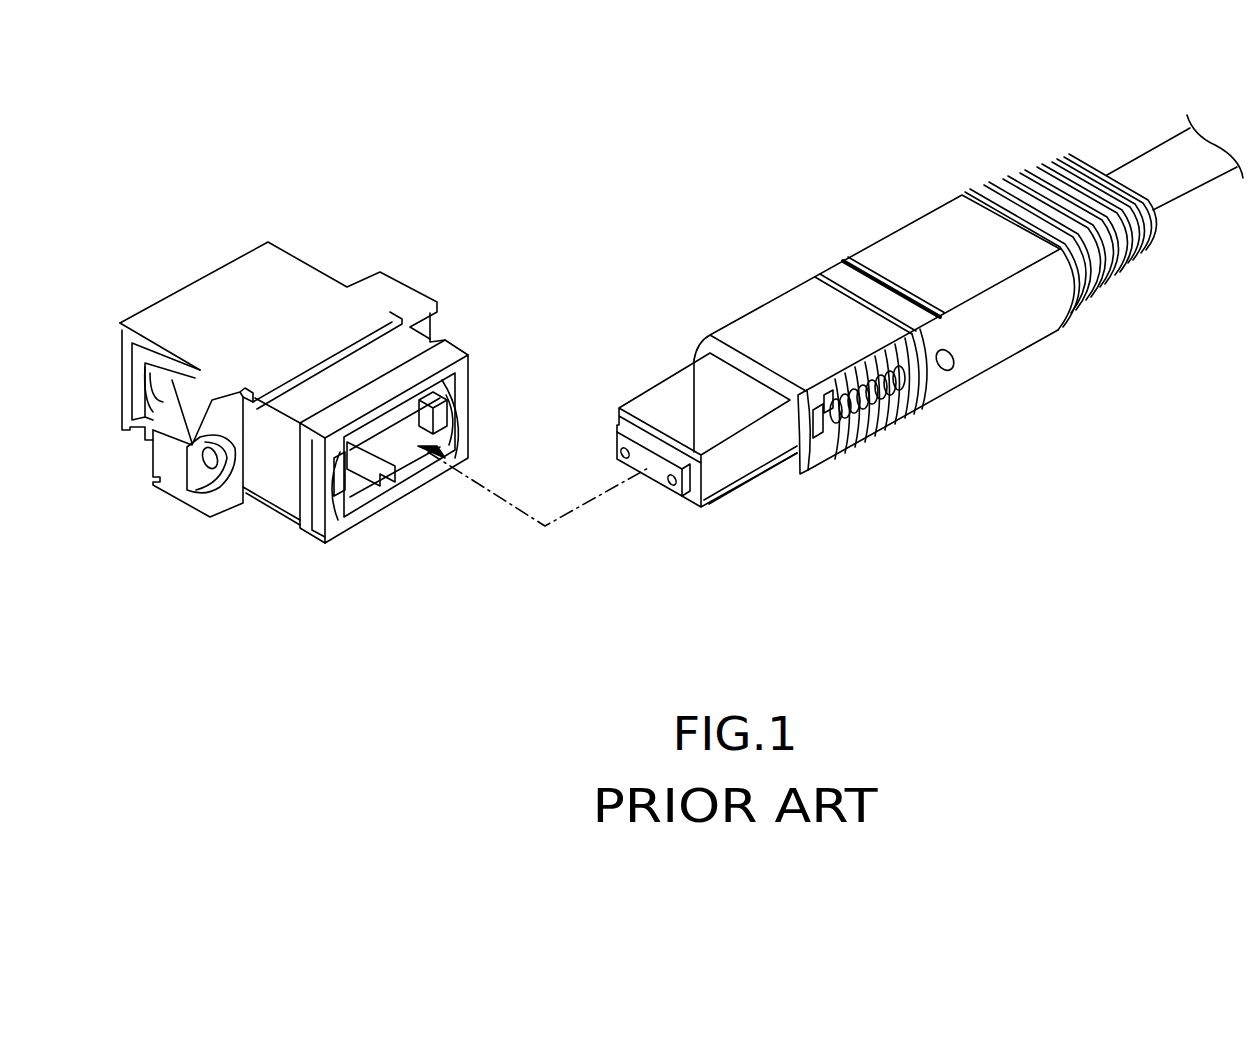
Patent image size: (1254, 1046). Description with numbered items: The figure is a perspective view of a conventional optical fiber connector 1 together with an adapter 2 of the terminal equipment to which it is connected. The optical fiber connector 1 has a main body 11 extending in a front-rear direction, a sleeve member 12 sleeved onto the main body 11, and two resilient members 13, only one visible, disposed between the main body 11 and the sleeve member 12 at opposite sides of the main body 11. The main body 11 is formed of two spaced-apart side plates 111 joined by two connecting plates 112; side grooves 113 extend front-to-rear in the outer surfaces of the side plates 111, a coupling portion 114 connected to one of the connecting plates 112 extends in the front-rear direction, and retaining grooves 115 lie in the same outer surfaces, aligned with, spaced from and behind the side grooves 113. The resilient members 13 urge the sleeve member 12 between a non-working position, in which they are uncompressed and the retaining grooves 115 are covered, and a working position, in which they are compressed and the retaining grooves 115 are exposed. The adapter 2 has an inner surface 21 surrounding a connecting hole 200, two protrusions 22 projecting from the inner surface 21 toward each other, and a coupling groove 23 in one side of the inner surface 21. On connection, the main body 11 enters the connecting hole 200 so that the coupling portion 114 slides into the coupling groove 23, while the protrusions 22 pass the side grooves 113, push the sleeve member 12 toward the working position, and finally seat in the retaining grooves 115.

The optical fiber connector 1 is at (876, 363).
The main body 11 is at (663, 443).
The side plates 111 is at (614, 426).
The connecting plates 112 is at (680, 393).
The side grooves 113 is at (737, 468).
The coupling portion 114 is at (657, 502).
The retaining grooves 115 is at (818, 452).
The sleeve member 12 is at (877, 363).
The resilient members 13 is at (897, 420).
The adapter 2 is at (385, 380).
The inner surface 21 is at (408, 412).
The protrusions 22 is at (440, 425).
The coupling groove 23 is at (373, 470).
The connecting hole 200 is at (453, 463).